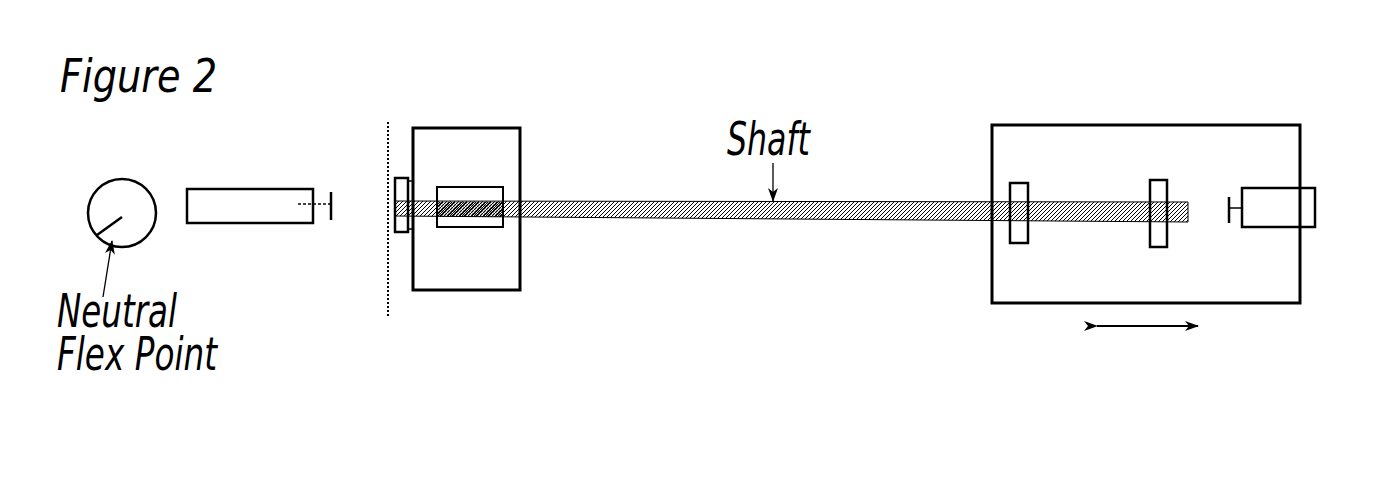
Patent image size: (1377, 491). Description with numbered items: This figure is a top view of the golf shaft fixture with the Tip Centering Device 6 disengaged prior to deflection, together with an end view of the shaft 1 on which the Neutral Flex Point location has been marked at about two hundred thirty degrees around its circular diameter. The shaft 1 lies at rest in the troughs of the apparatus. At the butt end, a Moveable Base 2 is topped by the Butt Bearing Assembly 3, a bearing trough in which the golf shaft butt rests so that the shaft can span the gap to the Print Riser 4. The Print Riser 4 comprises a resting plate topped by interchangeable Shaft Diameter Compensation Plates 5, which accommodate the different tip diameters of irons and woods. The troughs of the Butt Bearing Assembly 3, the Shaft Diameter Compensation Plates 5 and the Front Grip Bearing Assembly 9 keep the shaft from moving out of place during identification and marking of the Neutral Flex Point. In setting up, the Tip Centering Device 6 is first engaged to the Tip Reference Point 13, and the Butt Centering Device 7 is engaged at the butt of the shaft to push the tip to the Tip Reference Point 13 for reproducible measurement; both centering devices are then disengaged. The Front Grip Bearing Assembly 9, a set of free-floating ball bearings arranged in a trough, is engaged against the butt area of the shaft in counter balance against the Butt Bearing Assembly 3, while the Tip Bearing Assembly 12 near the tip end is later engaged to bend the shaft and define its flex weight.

The shaft 1 is at (152, 243).
The Moveable Base 2 is at (990, 278).
The Butt Bearing Assembly 3 is at (1160, 172).
The Print Riser 4 is at (485, 128).
The Shaft Diameter Compensation Plates 5 is at (507, 224).
The Tip Centering Device 6 is at (238, 186).
The Butt Centering Device 7 is at (1280, 187).
The Front Grip Bearing Assembly 9 is at (1017, 181).
The Tip Bearing Assembly 12 is at (402, 242).
The Tip Reference Point 13 is at (386, 193).